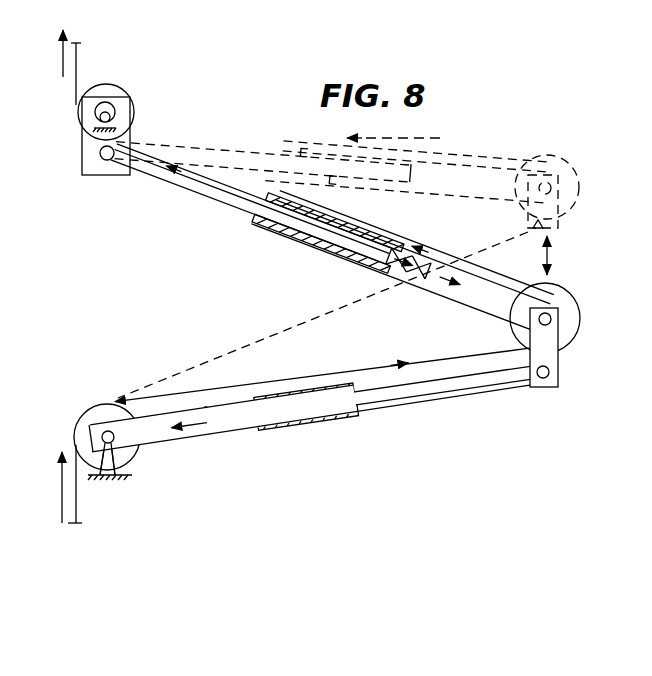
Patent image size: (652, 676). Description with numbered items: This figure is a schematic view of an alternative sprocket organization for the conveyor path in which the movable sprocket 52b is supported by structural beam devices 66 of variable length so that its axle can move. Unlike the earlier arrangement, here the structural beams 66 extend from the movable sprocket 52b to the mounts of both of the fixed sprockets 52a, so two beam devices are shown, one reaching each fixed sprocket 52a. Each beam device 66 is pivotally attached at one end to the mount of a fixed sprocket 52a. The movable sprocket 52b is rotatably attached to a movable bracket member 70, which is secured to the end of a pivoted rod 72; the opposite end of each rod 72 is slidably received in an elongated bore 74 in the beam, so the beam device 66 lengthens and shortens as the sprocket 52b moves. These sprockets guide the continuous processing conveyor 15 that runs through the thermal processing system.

The continuous processing conveyor 15 is at (352, 370).
The fixed sprocket 52a is at (118, 92).
The movable sprocket 52b is at (568, 300).
The structural beam device 66 is at (475, 300).
The movable bracket member 70 is at (549, 352).
The pivoted rod 72 is at (221, 196).
The elongated bore 74 is at (327, 236).